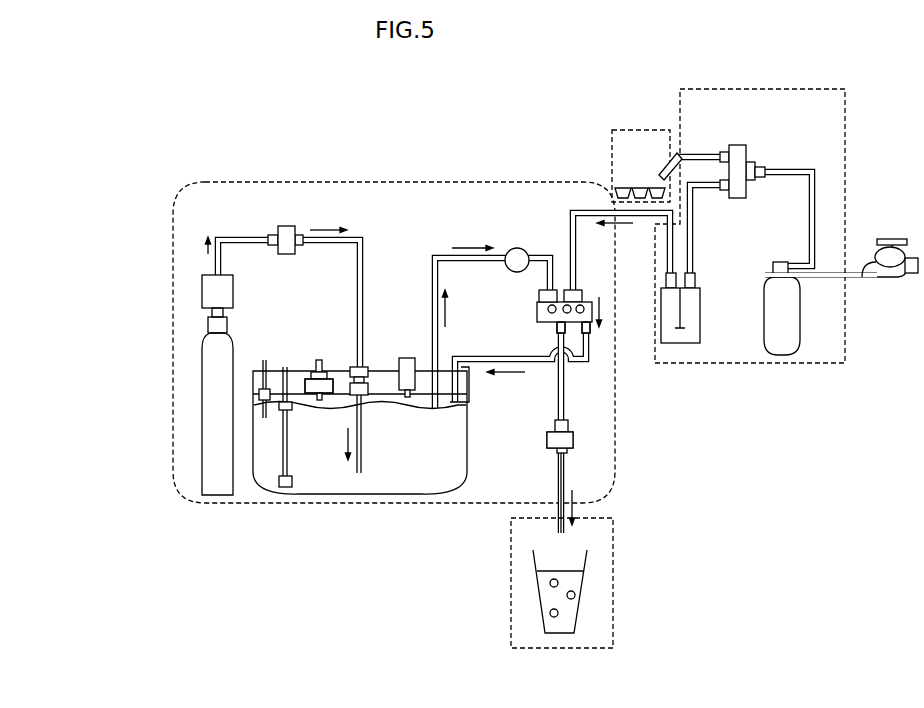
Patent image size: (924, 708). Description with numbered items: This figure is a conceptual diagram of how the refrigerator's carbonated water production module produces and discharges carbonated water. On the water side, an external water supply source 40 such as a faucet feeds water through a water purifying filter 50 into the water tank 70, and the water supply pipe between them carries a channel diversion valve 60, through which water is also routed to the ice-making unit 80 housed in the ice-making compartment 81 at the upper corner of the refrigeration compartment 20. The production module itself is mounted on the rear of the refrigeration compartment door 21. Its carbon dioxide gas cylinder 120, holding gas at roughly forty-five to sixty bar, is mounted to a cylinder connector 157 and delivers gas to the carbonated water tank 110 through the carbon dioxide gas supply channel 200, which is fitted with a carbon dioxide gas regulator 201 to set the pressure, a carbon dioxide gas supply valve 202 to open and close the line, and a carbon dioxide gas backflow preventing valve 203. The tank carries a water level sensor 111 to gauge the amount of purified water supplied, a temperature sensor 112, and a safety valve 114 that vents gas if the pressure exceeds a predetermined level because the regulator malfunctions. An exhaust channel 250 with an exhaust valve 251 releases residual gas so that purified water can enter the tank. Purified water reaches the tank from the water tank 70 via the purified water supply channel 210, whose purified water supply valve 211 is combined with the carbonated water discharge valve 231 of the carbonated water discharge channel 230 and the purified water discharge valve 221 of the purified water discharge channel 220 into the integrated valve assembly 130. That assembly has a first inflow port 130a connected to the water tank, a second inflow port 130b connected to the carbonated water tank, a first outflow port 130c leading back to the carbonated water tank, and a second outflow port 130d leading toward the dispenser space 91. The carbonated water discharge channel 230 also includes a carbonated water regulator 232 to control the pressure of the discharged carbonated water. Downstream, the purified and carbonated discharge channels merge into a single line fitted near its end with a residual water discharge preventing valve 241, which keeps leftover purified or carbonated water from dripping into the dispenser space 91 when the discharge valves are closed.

The refrigeration compartment 20 is at (845, 305).
The refrigeration compartment door 21 is at (173, 308).
The external water supply source 40 is at (902, 255).
The water purifying filter 50 is at (800, 325).
The channel diversion valve 60 is at (748, 158).
The water tank 70 is at (700, 333).
The ice-making unit 80 is at (634, 187).
The ice-making compartment 81 is at (653, 130).
The dispenser space 91 is at (613, 557).
The carbonated water tank 110 is at (423, 504).
The water level sensor 111 is at (285, 487).
The temperature sensor 112 is at (262, 360).
The safety valve 114 is at (407, 358).
The carbon dioxide gas cylinder 120 is at (210, 405).
The cylinder connector 157 is at (212, 312).
The integrated valve assembly 130 is at (603, 282).
The first inflow port 130a is at (574, 288).
The second inflow port 130b is at (541, 290).
The first outflow port 130c is at (595, 330).
The second outflow port 130d is at (557, 332).
The carbon dioxide gas supply channel 200 is at (358, 232).
The carbon dioxide gas regulator 201 is at (202, 285).
The carbon dioxide gas supply valve 202 is at (287, 225).
The carbon dioxide gas backflow preventing valve 203 is at (364, 366).
The purified water supply channel 210 is at (588, 363).
The purified water supply valve 211 is at (593, 308).
The purified water discharge channel 220 is at (565, 410).
The purified water discharge valve 221 is at (562, 313).
The carbonated water discharge channel 230 is at (452, 255).
The carbonated water discharge valve 231 is at (548, 309).
The carbonated water regulator 232 is at (518, 247).
The residual water discharge preventing valve 241 is at (573, 440).
The exhaust channel 250 is at (320, 360).
The exhaust valve 251 is at (308, 372).